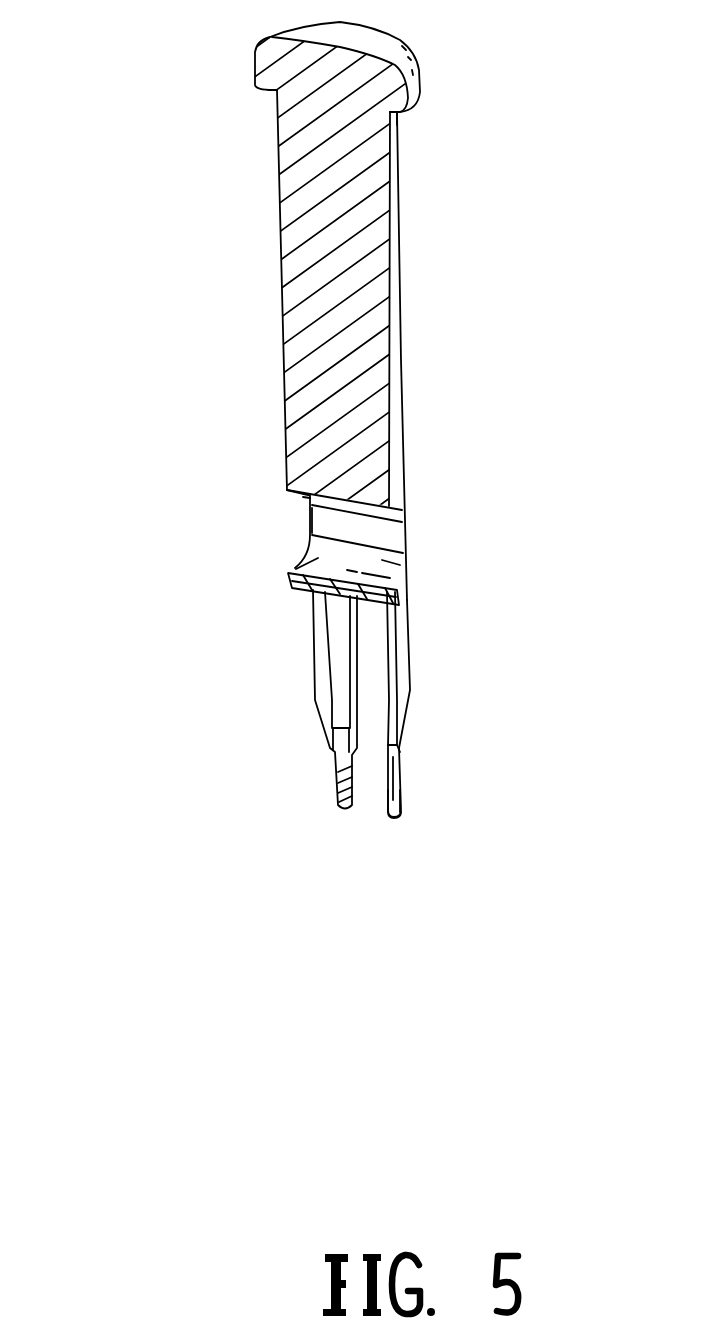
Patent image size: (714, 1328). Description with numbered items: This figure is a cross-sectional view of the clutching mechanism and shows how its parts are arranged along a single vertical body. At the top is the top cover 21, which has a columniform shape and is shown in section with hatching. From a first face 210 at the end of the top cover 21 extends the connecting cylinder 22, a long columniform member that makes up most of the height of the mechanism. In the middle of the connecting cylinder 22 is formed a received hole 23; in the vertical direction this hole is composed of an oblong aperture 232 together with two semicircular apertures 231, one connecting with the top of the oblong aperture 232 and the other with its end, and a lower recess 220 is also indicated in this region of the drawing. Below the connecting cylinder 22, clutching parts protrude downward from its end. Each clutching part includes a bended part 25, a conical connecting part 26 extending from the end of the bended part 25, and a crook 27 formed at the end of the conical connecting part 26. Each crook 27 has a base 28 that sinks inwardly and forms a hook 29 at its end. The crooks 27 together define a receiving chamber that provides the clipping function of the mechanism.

The top cover 21 is at (400, 53).
The first face 210 is at (398, 110).
The connecting cylinder 22 is at (398, 333).
The received hole 23 is at (407, 535).
The semicircular apertures 231 is at (303, 500).
The oblong aperture 232 is at (310, 525).
The recess 220 is at (289, 586).
The bended part 25 is at (403, 637).
The conical connecting part 26 is at (409, 730).
The crook 27 is at (399, 777).
The base 28 is at (400, 803).
The hook 29 is at (397, 817).